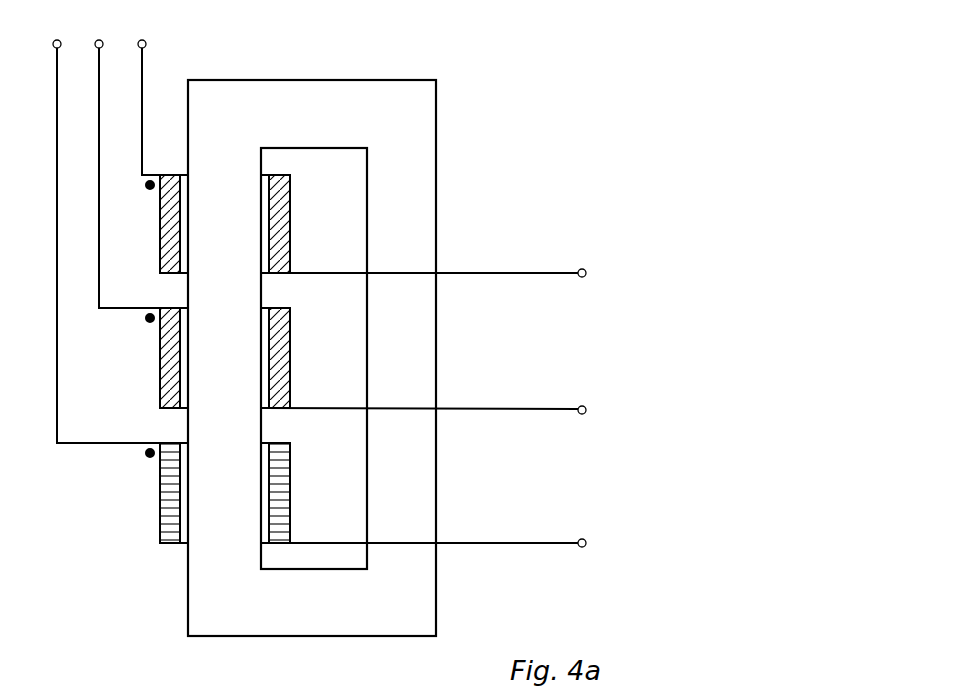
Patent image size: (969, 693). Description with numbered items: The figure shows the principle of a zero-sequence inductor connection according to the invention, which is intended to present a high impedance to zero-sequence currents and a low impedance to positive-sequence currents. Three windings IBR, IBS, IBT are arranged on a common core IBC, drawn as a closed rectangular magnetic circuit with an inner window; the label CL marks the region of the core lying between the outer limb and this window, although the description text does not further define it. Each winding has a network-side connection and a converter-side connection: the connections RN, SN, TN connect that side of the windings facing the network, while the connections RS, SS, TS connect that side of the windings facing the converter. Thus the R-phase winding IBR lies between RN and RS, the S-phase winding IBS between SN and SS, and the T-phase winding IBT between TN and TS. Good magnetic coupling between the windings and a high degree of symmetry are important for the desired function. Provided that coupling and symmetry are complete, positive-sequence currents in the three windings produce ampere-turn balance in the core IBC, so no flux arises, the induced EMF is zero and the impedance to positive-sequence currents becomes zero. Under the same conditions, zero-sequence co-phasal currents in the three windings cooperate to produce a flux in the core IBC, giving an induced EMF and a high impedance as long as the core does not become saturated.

The network-side connection of R-phase winding RN is at (102, 227).
The network-side connection of S-phase winding SN is at (124, 159).
The network-side connection of T-phase winding TN is at (145, 93).
The common core IBC is at (355, 92).
The center leg of core CL is at (241, 444).
The T-phase winding IBT is at (291, 206).
The S-phase winding IBS is at (291, 352).
The R-phase winding IBR is at (291, 477).
The converter-side connection of T-phase winding TS is at (441, 275).
The converter-side connection of S-phase winding SS is at (441, 410).
The converter-side connection of R-phase winding RS is at (442, 543).